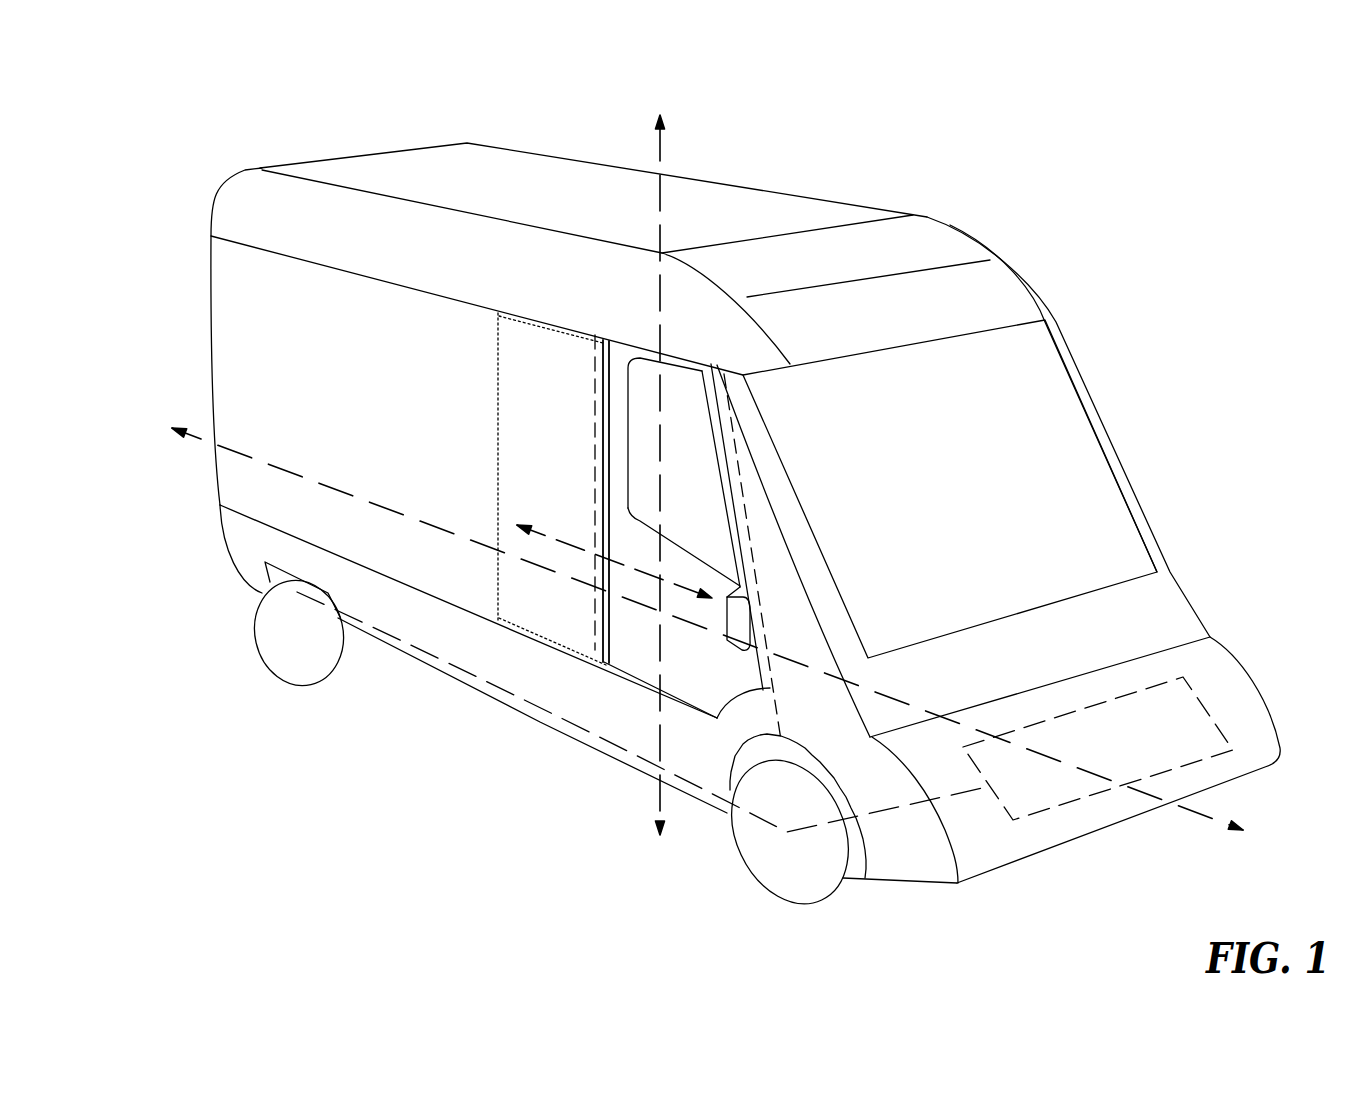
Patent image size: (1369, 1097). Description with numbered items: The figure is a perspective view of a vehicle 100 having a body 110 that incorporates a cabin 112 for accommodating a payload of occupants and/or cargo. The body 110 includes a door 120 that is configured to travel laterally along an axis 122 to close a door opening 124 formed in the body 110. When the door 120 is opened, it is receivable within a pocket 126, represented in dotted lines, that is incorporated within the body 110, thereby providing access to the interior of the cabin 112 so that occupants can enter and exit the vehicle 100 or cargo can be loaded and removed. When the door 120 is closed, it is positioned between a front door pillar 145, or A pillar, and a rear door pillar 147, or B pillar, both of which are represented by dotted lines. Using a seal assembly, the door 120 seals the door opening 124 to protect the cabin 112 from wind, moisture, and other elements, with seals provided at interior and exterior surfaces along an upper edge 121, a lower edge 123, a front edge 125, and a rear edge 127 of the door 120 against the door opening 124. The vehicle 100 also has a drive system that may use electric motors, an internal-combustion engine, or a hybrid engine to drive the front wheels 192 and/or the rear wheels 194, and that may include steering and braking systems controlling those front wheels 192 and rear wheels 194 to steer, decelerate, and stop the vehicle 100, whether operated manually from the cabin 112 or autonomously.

The vehicle 100 is at (152, 106).
The body 110 is at (1050, 300).
The cabin 112 is at (1020, 440).
The door 120 is at (625, 652).
The upper edge 121 is at (705, 357).
The axis 122 is at (603, 550).
The lower edge 123 is at (643, 690).
The door opening 124 is at (687, 352).
The front edge 125 is at (762, 590).
The pocket 126 is at (552, 585).
The rear edge 127 is at (600, 525).
The front door pillar 145 is at (768, 630).
The rear door pillar 147 is at (595, 423).
The front wheels 192 is at (832, 892).
The rear wheels 194 is at (323, 683).